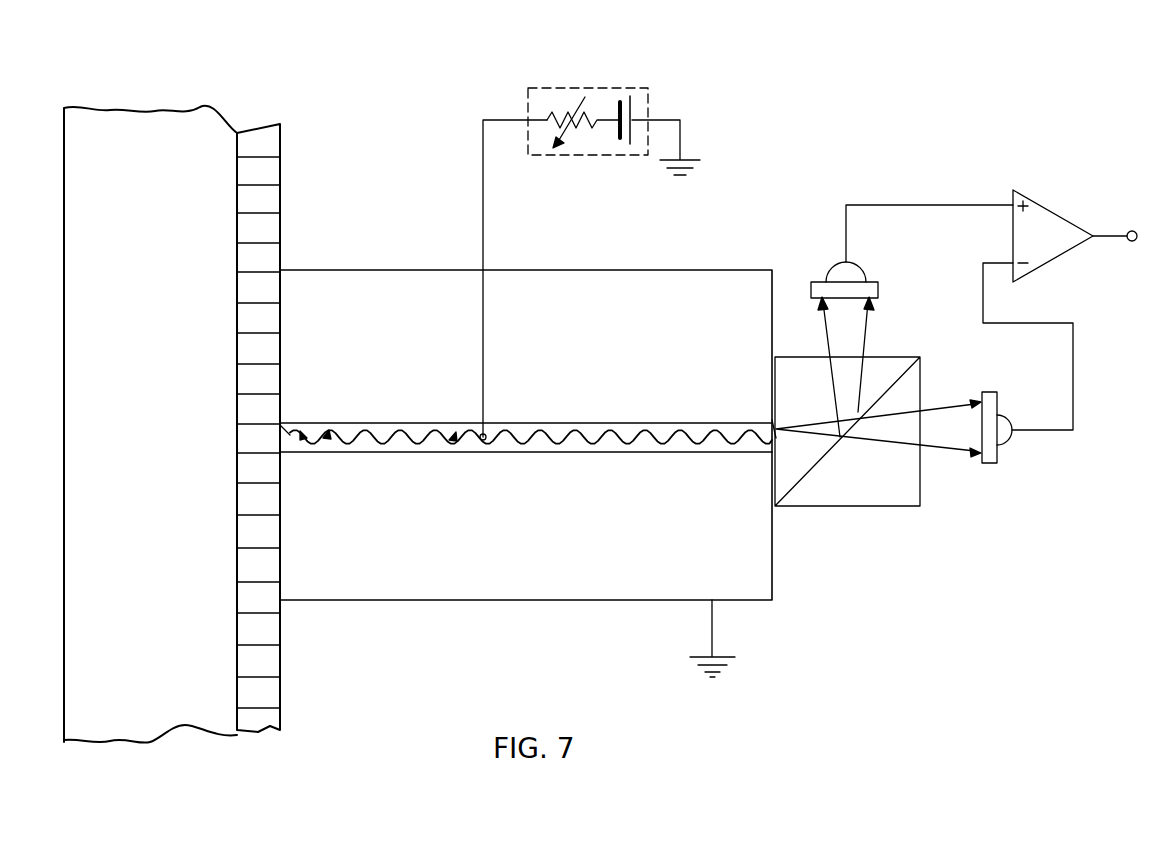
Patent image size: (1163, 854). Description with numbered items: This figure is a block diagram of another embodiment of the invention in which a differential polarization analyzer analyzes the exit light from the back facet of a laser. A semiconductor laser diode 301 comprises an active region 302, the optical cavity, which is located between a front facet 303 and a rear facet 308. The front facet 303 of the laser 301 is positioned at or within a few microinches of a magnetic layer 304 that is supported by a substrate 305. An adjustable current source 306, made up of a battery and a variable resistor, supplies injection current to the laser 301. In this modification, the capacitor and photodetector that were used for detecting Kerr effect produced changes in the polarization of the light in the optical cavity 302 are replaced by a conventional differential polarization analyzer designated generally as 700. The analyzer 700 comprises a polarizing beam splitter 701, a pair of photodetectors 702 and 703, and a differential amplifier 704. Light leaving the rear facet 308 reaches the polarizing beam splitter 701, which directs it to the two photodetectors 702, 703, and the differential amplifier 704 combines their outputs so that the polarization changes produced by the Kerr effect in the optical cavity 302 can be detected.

The semiconductor laser diode 301 is at (772, 565).
The active region 302 is at (720, 453).
The front facet 303 is at (284, 427).
The magnetic layer 304 is at (267, 145).
The substrate 305 is at (152, 135).
The adjustable current source 306 is at (598, 88).
The rear facet 308 is at (785, 410).
The differential polarization analyzer 700 is at (966, 483).
The polarizing beam splitter 701 is at (885, 492).
The photodetector 702 is at (838, 275).
The photodetector 703 is at (1005, 438).
The differential amplifier 704 is at (1043, 216).